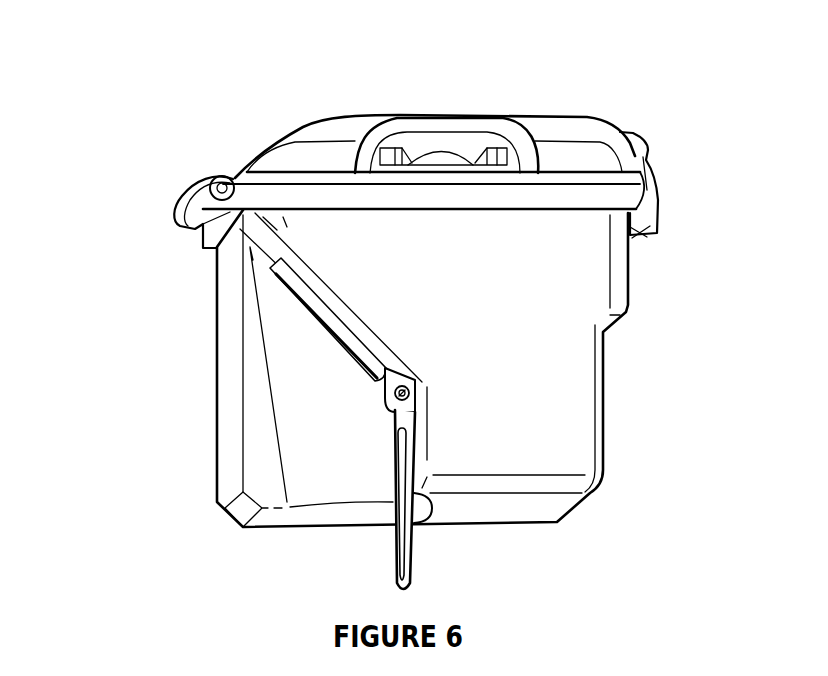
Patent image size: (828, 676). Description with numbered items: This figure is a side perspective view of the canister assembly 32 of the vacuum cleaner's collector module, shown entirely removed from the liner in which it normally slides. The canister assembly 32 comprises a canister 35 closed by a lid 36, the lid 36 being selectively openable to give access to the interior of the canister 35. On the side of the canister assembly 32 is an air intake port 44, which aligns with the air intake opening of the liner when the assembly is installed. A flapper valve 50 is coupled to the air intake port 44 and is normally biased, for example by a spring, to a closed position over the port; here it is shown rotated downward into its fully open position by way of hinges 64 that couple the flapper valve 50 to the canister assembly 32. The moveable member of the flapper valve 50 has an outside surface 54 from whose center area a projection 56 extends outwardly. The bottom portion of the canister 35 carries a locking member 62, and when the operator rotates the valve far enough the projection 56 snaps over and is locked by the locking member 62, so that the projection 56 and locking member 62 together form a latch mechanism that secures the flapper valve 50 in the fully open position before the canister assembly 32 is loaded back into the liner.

The canister assembly 32 is at (205, 70).
The lid 36 is at (330, 117).
The canister 35 is at (227, 370).
The air intake port 44 is at (257, 290).
The flapper valve 50 is at (423, 465).
The outside surface 54 is at (395, 553).
The projection 56 is at (413, 533).
The locking member 62 is at (413, 493).
The hinges 64 is at (387, 407).